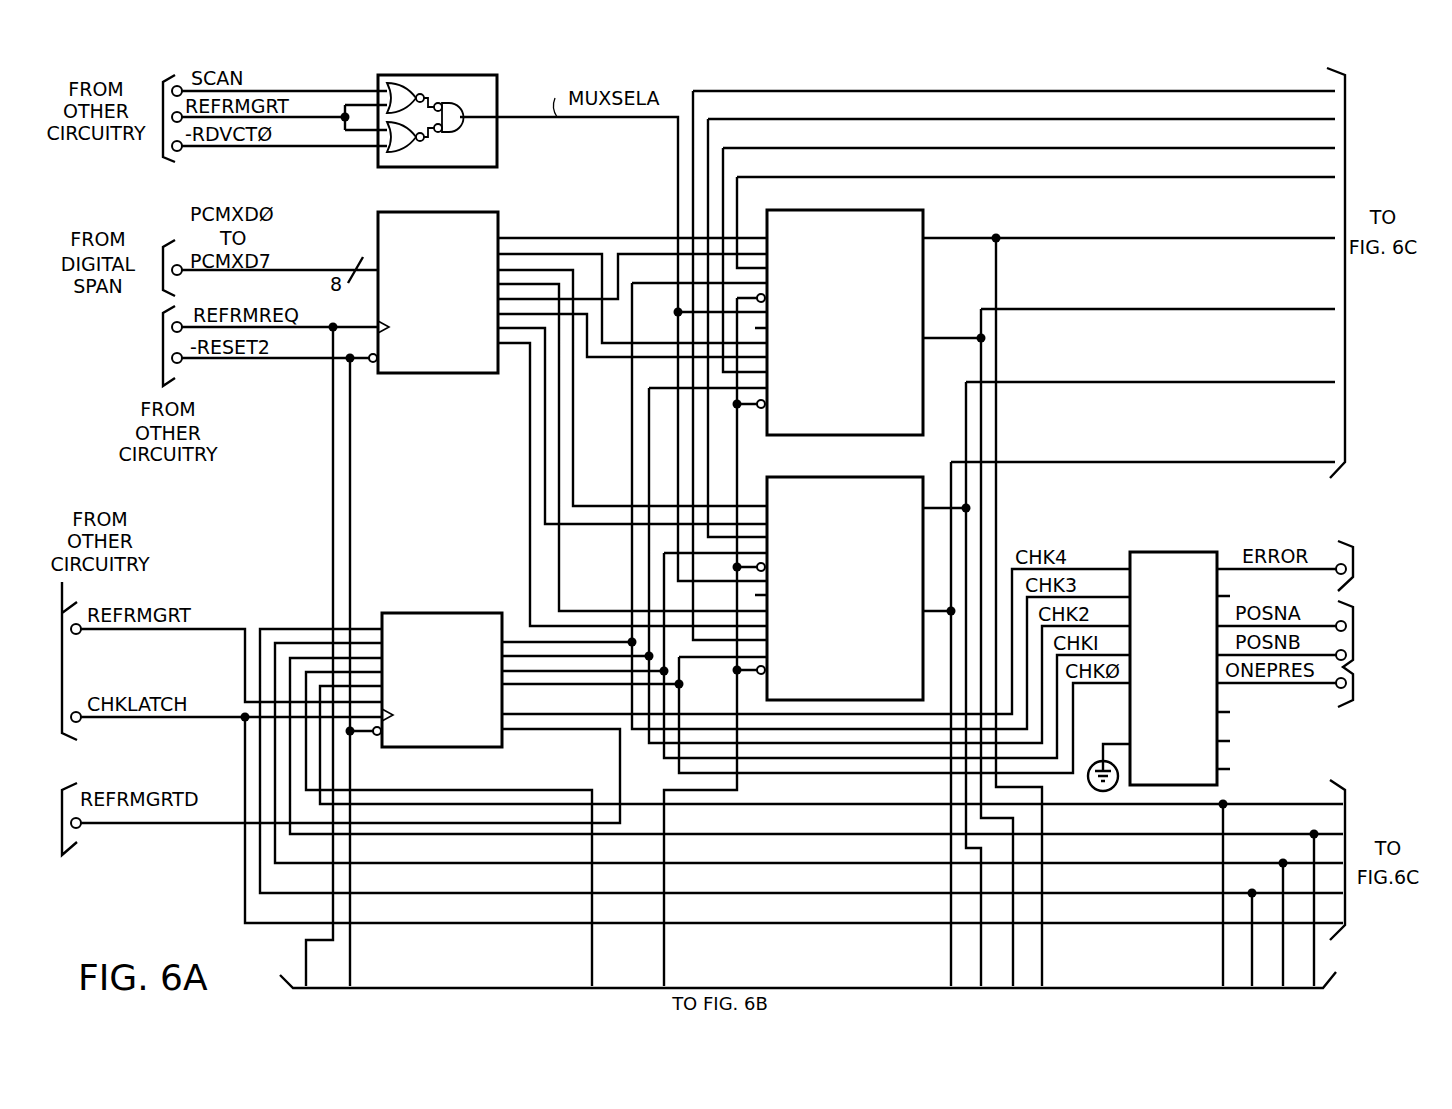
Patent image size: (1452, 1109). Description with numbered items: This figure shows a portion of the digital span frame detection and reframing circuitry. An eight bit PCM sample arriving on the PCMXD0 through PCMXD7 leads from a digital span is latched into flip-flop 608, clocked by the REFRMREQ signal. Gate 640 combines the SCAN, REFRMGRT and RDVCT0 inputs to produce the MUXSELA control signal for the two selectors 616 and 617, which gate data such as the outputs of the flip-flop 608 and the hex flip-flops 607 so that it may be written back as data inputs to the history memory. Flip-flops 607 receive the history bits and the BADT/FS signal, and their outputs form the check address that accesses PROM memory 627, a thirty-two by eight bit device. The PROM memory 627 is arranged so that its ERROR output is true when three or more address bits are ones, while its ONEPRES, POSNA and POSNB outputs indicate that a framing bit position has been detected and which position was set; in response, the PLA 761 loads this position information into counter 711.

The gate 640 is at (499, 157).
The flip-flop 608 is at (470, 374).
The flip-flops 607 is at (453, 613).
The selector 617 is at (857, 436).
The selector 616 is at (814, 476).
The PROM memory 627 is at (1173, 551).
The PLA 761 is at (727, 730).
The counter 711 is at (1393, 631).